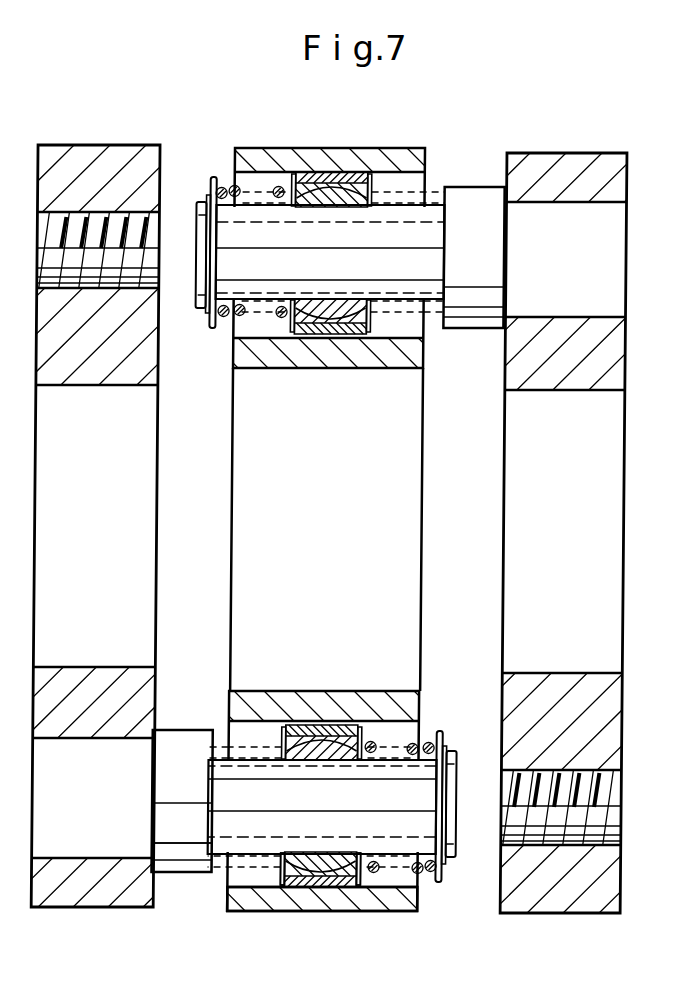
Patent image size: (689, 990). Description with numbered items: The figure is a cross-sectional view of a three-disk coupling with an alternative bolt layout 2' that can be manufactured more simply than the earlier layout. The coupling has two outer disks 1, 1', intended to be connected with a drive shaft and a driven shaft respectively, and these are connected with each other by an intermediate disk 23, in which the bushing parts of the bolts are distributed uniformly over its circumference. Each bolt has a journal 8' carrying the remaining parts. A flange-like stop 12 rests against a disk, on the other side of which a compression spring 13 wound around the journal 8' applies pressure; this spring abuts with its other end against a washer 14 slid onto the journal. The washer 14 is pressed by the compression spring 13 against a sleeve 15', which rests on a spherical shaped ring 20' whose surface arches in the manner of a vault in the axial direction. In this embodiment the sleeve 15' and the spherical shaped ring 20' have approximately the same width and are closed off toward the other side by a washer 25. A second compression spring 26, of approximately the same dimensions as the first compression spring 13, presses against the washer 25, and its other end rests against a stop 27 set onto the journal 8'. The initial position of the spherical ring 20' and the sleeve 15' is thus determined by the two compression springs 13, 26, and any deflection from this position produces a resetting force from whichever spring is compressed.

The disk 1 is at (137, 548).
The disk 1' is at (552, 556).
The bolt layout 2' is at (183, 771).
The journal 8' is at (316, 841).
The flange-like stop 12 is at (182, 875).
The compression spring 13 is at (227, 745).
The washer 14 is at (290, 905).
The sleeve 15' is at (326, 906).
The spherical shaped ring 20' is at (327, 844).
The intermediate disk 23 is at (253, 900).
The washer 25 is at (380, 912).
The compression spring 26 is at (430, 870).
The stop 27 is at (455, 860).